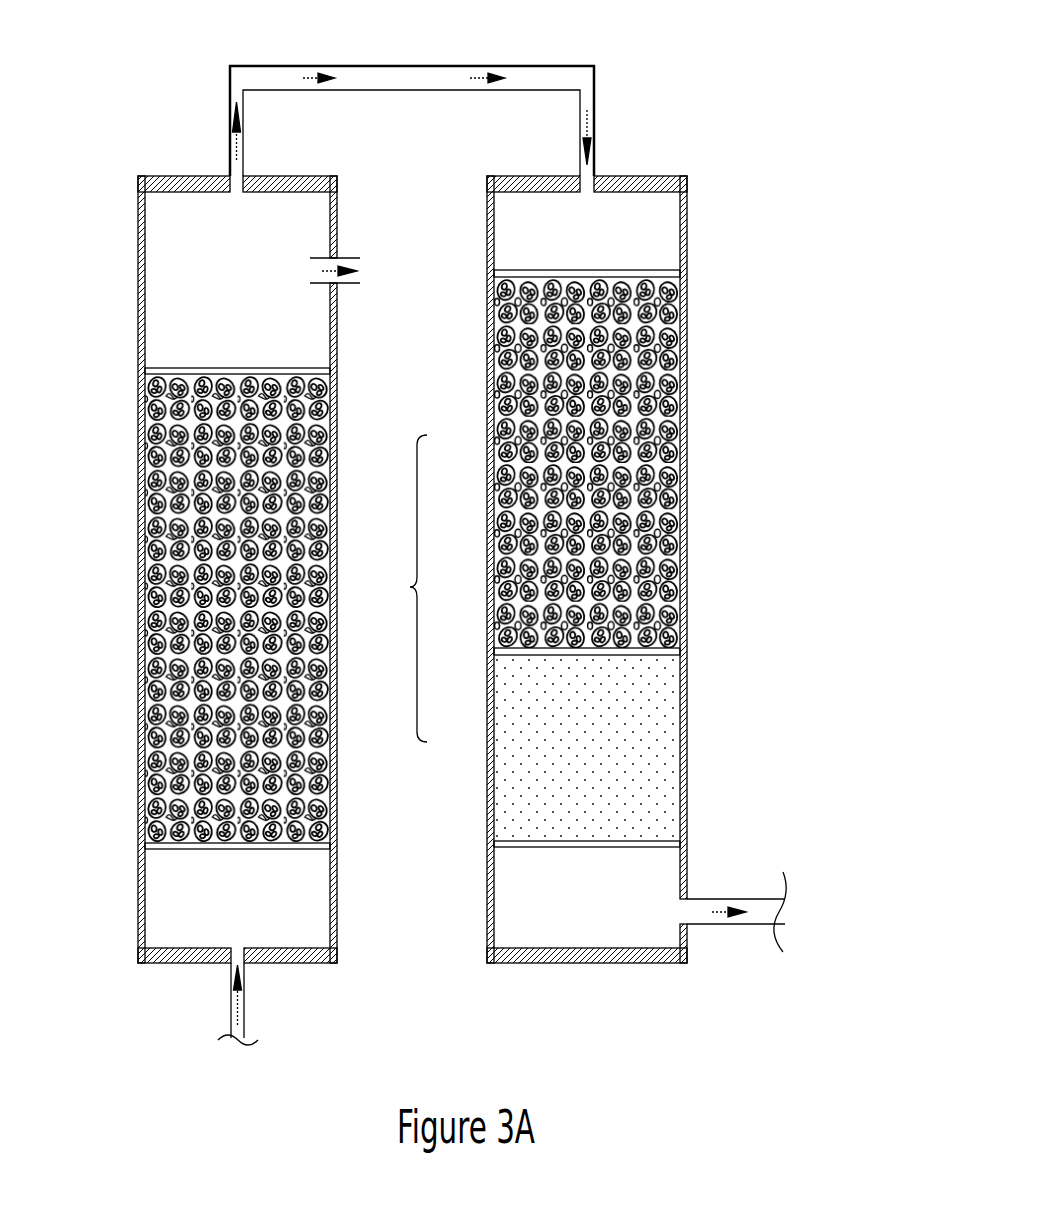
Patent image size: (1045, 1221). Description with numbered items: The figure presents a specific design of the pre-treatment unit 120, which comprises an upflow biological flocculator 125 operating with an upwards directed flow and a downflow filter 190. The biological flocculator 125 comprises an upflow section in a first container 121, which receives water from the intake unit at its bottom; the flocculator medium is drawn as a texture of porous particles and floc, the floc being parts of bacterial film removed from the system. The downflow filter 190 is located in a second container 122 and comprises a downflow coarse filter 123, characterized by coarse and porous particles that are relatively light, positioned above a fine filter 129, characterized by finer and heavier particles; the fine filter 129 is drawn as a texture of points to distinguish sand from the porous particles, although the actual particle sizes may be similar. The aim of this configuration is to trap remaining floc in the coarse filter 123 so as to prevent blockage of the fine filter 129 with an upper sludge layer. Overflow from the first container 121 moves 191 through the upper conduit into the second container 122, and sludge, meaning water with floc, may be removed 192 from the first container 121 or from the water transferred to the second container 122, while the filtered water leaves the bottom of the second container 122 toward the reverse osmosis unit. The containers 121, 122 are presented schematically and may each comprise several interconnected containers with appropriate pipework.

The pre-treatment unit 120 is at (73, 117).
The container 121 is at (190, 115).
The second container 122 is at (665, 110).
The downflow coarse filter 123 is at (498, 430).
The upflow biological flocculator 125 is at (150, 570).
The fine filter 129 is at (493, 719).
The downflow filter 190 is at (402, 588).
The overflow 191 is at (302, 66).
The sludge removal 192 is at (353, 252).